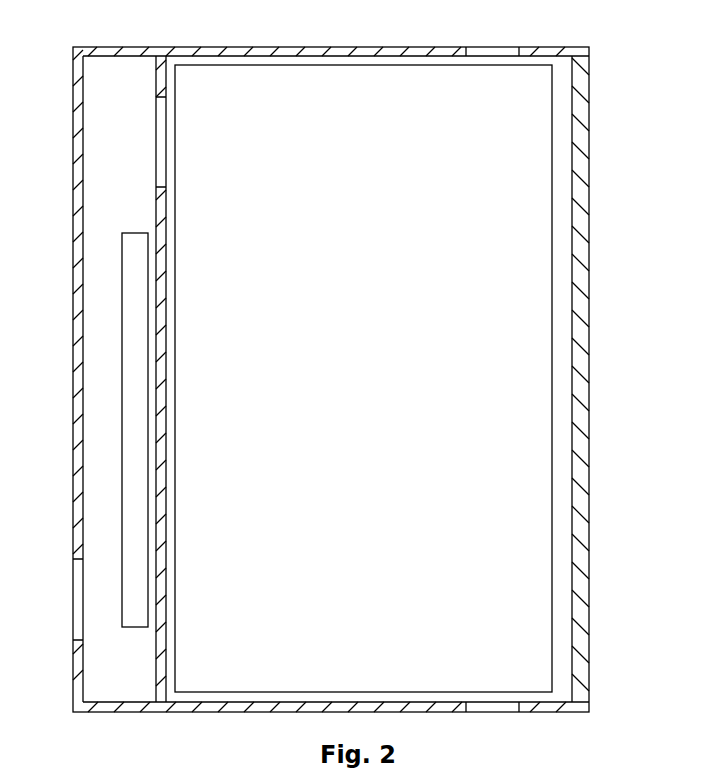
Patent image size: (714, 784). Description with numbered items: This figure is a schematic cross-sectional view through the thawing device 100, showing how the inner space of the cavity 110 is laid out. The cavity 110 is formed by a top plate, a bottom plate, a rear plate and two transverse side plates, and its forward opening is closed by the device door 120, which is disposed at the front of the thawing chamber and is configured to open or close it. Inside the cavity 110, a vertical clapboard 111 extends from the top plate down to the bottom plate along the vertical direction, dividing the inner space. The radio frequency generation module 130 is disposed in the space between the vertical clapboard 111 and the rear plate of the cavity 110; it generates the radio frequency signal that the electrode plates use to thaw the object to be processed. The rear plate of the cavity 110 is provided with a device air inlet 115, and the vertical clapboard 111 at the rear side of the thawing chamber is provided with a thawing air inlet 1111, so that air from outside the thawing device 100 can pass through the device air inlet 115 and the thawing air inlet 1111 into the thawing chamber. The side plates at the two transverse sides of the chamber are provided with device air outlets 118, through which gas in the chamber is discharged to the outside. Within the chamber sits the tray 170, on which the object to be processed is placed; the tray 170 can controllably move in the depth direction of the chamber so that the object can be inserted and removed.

The thawing device 100 is at (70, 25).
The cavity 110 is at (300, 50).
The device air outlets 118 is at (477, 50).
The thawing air inlet 1111 is at (160, 135).
The vertical clapboard 111 is at (163, 337).
The radio frequency generation module 130 is at (132, 479).
The device air inlet 115 is at (77, 608).
The device door 120 is at (577, 352).
The tray 170 is at (525, 536).